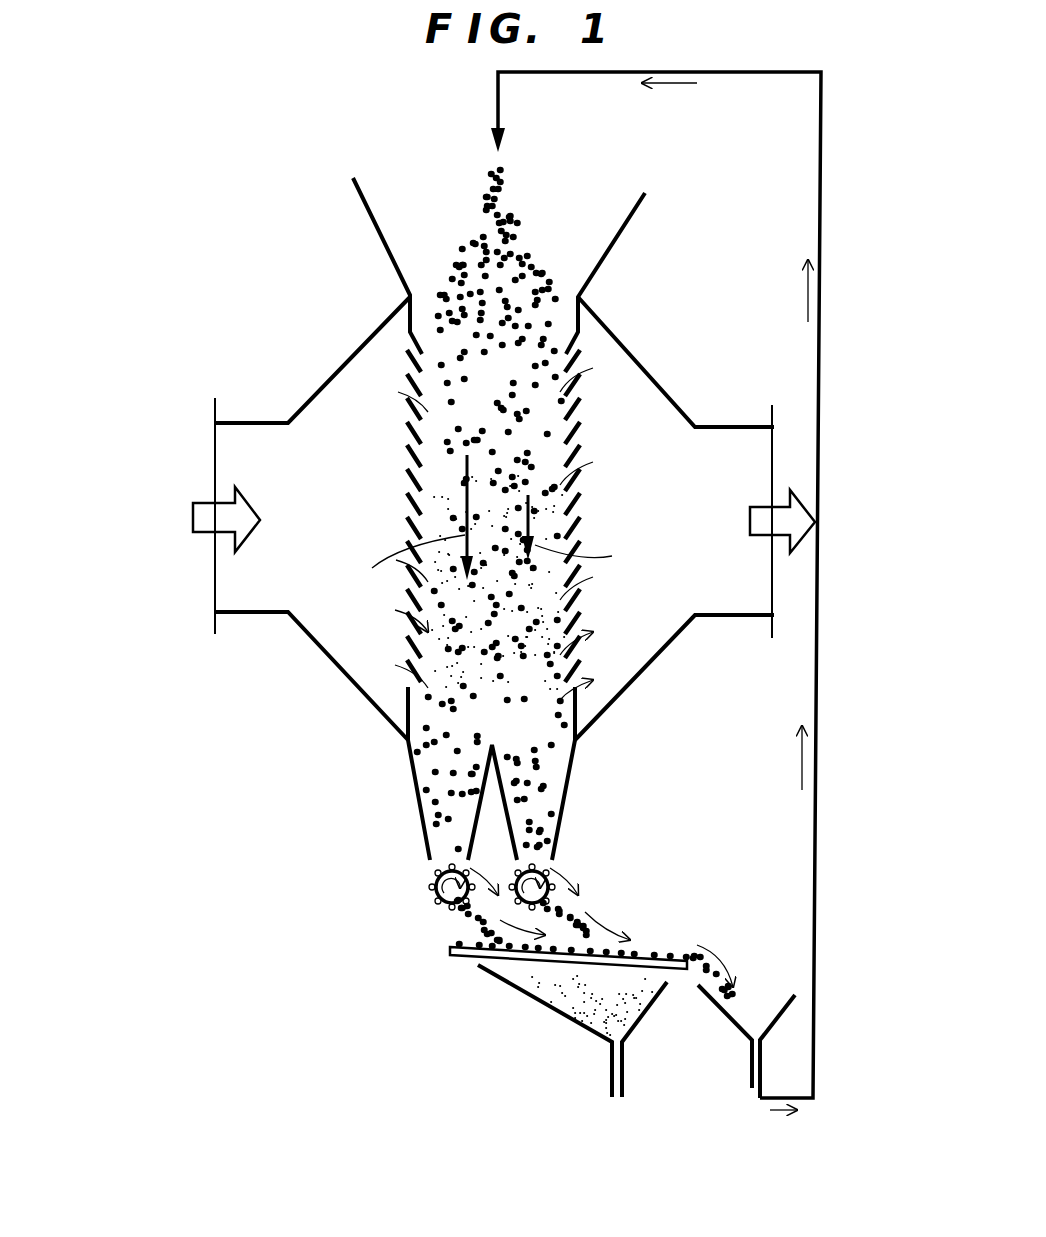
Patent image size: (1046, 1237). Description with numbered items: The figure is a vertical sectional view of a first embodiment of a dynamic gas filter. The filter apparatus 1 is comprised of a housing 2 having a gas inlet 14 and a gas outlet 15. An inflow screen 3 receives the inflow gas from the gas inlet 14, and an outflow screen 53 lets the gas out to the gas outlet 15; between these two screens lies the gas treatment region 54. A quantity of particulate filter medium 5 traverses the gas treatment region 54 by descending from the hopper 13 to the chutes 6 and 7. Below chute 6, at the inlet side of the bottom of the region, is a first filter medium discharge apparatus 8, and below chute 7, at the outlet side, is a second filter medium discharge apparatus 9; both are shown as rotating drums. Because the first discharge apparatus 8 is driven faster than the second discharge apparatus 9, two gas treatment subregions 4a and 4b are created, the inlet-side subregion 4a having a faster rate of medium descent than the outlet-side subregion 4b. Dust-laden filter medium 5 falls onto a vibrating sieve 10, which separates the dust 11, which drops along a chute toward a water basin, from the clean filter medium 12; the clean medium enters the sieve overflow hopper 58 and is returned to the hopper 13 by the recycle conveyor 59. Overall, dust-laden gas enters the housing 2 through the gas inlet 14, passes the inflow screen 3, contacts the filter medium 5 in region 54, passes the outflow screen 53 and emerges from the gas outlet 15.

The filter apparatus 1 is at (335, 215).
The housing 2 is at (383, 322).
The inflow screen 3 is at (415, 430).
The gas treatment subregion 4a is at (450, 515).
The gas treatment subregion 4b is at (540, 515).
The particulate filter medium 5 is at (462, 677).
The chute 6 is at (415, 812).
The chute 7 is at (565, 808).
The first filter medium discharge apparatus 8 is at (450, 893).
The second filter medium discharge apparatus 9 is at (545, 897).
The vibrating sieve 10 is at (678, 958).
The dust 11 is at (598, 1000).
The clean filter medium 12 is at (745, 1010).
The hopper 13 is at (600, 267).
The gas inlet 14 is at (258, 578).
The gas outlet 15 is at (738, 570).
The outflow screen 53 is at (578, 432).
The gas treatment region 54 is at (493, 383).
The sieve overflow hopper 58 is at (777, 1010).
The recycle conveyor 59 is at (815, 842).